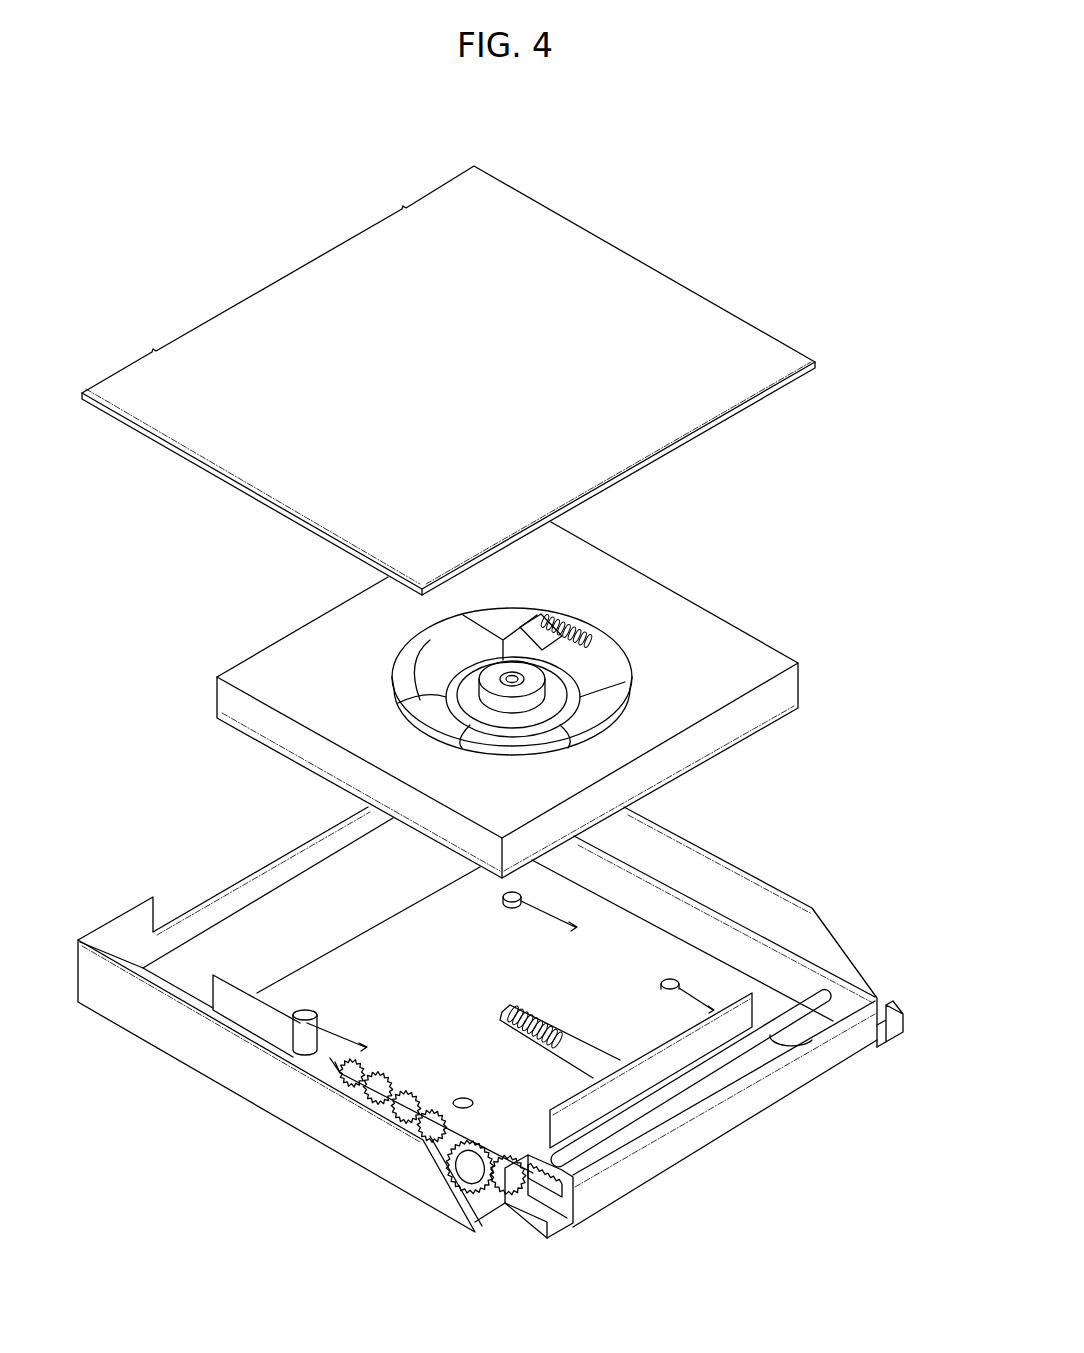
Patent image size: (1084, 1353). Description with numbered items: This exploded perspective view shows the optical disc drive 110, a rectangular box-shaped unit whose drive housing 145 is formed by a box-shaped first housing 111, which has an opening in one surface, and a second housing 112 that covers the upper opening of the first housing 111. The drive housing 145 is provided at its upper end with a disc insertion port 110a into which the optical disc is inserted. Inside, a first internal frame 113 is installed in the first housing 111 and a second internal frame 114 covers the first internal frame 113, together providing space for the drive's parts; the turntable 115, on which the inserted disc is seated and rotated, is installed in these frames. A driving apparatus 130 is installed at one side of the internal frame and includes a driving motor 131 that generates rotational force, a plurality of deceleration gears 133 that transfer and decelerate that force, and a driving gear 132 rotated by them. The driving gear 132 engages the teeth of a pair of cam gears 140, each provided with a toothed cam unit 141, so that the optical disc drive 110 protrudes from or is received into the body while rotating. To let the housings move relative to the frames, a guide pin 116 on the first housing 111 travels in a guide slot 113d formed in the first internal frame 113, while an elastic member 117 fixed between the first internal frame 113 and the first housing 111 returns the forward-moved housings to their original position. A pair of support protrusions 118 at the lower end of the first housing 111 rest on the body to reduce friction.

The optical disc drive 110 is at (128, 200).
The disc insertion port 110a is at (215, 880).
The first housing 111 is at (786, 893).
The second housing 112 is at (643, 284).
The first internal frame 113 is at (703, 915).
The guide slot 113d is at (560, 927).
The second internal frame 114 is at (713, 635).
The turntable 115 is at (572, 687).
The guide pin 116 is at (520, 903).
The elastic member 117 is at (540, 1023).
The support protrusions 118 is at (800, 1043).
The driving apparatus 130 is at (380, 1085).
The driving motor 131 is at (310, 1057).
The driving gear 132 is at (515, 1168).
The deceleration gears 133 is at (468, 1160).
The cam gears 140 is at (897, 1020).
The cam unit 141 is at (557, 1195).
The drive housing 145 is at (270, 1161).